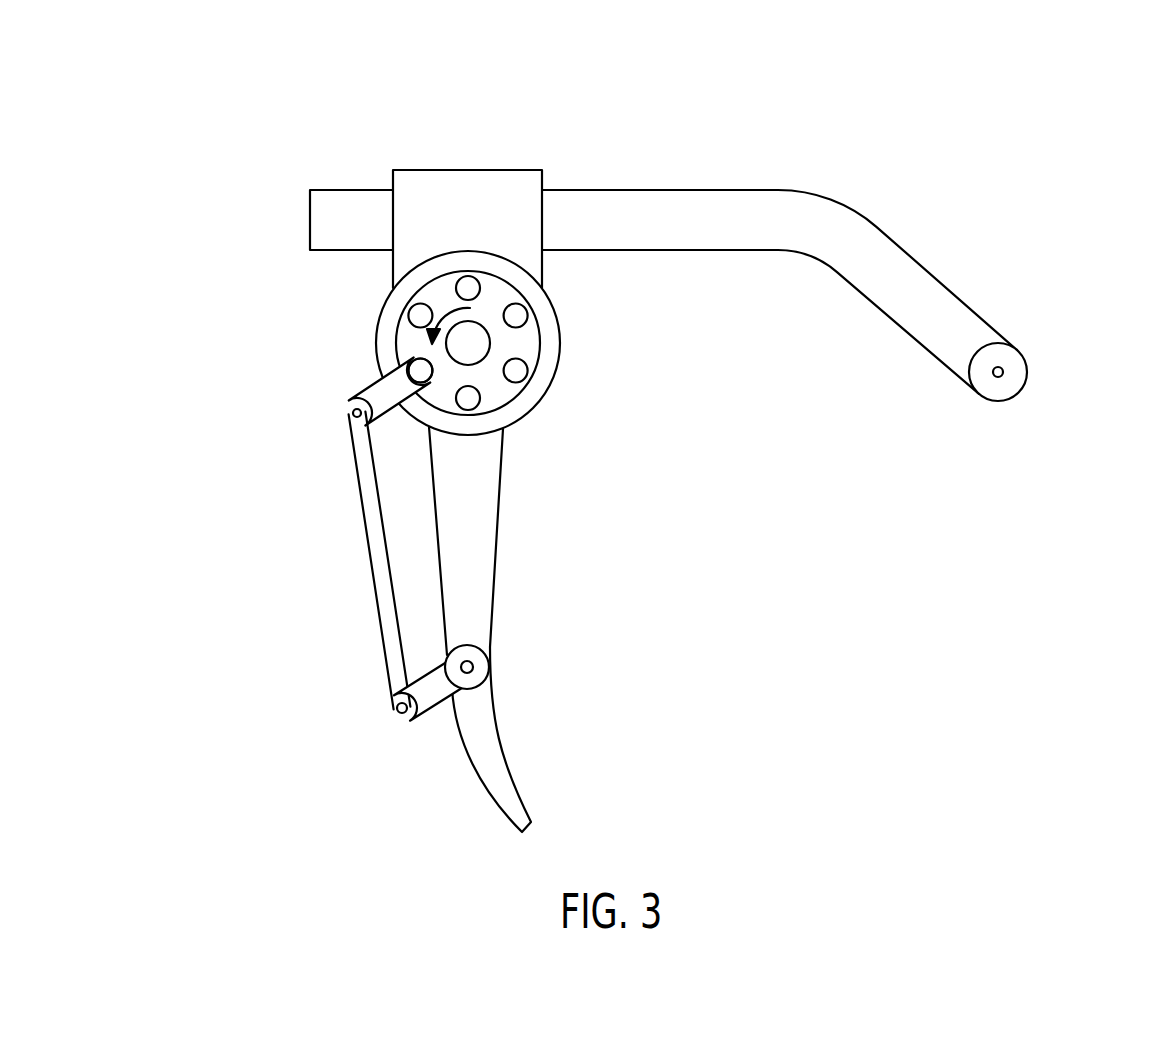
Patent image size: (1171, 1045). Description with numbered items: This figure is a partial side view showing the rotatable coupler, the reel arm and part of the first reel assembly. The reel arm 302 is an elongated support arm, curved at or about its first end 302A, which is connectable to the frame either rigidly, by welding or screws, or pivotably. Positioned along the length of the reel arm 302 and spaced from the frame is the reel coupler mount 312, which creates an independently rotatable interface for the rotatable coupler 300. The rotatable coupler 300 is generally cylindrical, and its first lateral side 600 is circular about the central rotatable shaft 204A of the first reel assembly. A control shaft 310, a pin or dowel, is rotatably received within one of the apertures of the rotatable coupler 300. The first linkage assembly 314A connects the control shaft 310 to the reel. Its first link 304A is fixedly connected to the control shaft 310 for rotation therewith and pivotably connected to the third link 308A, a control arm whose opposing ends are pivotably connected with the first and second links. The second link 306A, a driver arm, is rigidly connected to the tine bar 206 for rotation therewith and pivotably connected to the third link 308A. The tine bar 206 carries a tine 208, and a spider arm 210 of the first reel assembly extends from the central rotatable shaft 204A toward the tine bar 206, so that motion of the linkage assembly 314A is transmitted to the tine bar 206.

The reel coupler mount 312 is at (503, 169).
The first lateral side 600 is at (438, 297).
The reel arm 302 is at (885, 227).
The first end 302A is at (1027, 371).
The control shaft 310 is at (414, 358).
The rotatable coupler 300 is at (548, 297).
The central rotatable shaft 204A is at (490, 343).
The first link 304A is at (358, 395).
The first linkage assembly 314A is at (268, 513).
The third link 308A is at (378, 615).
The second link 306A is at (400, 725).
The tine bar 206 is at (487, 680).
The tine 208 is at (518, 803).
The spider arm 210 is at (496, 560).